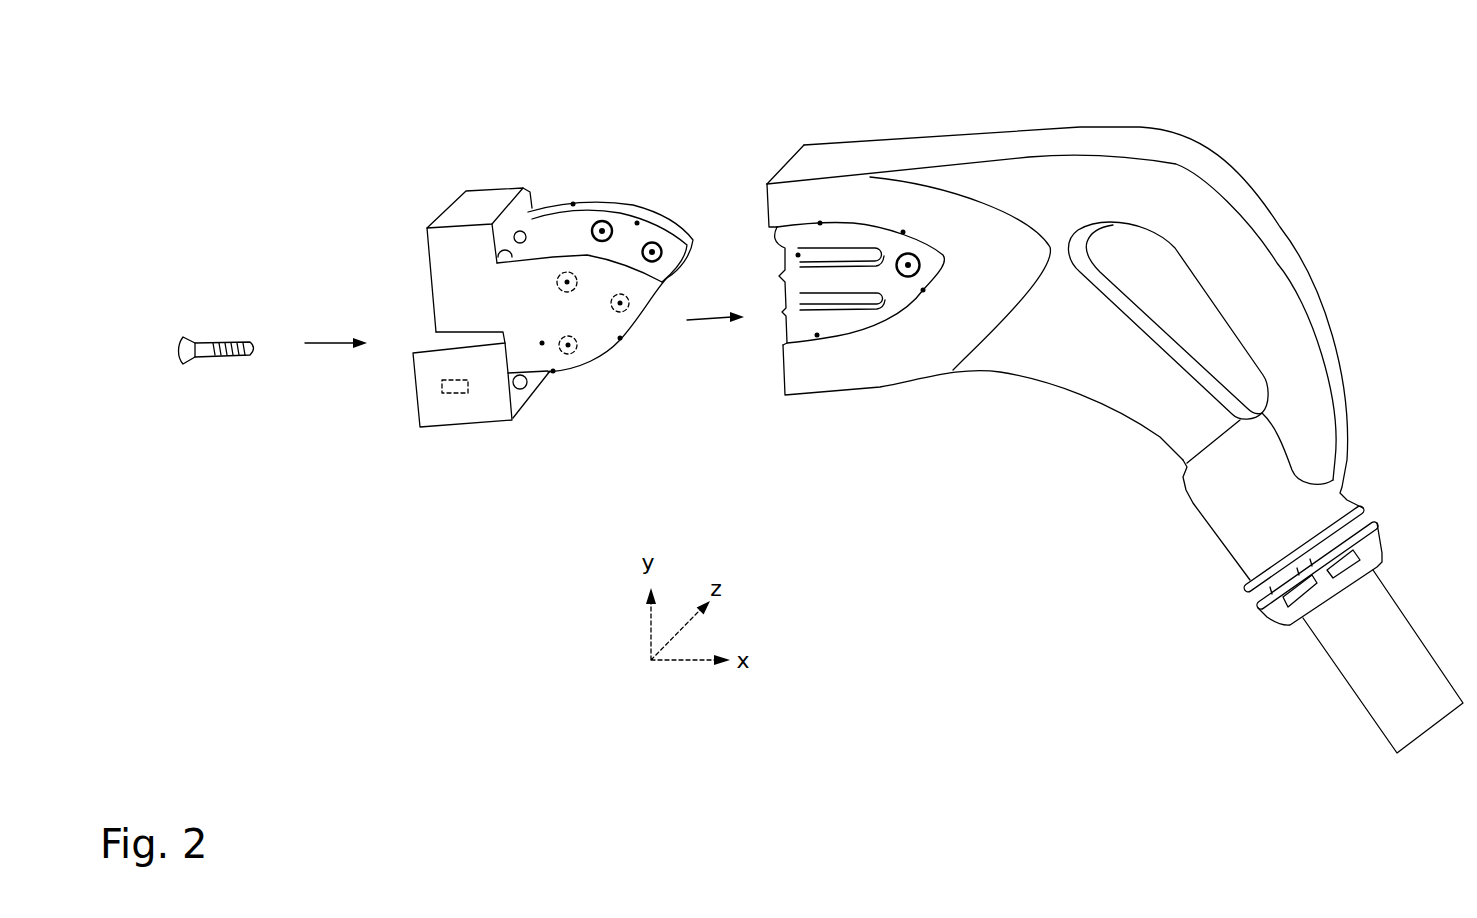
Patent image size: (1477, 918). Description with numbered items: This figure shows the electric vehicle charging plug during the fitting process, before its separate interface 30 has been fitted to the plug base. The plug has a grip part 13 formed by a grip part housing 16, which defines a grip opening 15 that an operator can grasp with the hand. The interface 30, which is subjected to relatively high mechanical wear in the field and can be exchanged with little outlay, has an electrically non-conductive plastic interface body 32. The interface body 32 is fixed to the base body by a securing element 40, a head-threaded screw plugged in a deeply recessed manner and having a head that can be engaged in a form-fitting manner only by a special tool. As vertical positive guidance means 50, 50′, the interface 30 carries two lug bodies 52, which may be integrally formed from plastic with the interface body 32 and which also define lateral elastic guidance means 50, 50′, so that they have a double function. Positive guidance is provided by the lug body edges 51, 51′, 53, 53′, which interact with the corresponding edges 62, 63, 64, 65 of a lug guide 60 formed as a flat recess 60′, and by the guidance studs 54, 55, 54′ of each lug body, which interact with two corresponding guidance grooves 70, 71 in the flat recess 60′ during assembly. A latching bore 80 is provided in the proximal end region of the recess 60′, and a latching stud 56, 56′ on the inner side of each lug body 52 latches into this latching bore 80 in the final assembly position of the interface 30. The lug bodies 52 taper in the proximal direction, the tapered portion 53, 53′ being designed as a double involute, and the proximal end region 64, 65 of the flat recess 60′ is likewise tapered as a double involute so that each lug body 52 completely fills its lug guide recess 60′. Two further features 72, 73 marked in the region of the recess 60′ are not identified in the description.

The grip part 13 is at (1080, 402).
The grip opening 15 is at (1147, 321).
The grip part housing 16 is at (998, 150).
The interface 30 is at (558, 282).
The interface body 32 is at (472, 217).
The securing element 40 is at (222, 315).
The vertical positive guidance means 50 is at (568, 392).
The vertical positive guidance means 50′ is at (595, 185).
The lug body edge 51 is at (553, 371).
The lug body edge 51′ is at (573, 204).
The lug body 52 is at (542, 343).
The tapered portion 53 is at (620, 338).
The tapered portion 53′ is at (667, 218).
The guidance stud 54 is at (566, 272).
The guidance stud 54′ is at (605, 221).
The guidance stud 55 is at (585, 374).
The latching stud 56 is at (627, 309).
The latching stud 56′ is at (661, 250).
The lug guide 60 is at (850, 269).
The flat recess 60′ is at (800, 281).
The edge of the lug guide 62 is at (820, 223).
The edge of the lug guide 63 is at (817, 335).
The proximal end region edge 64 is at (903, 232).
The proximal end region edge 65 is at (923, 290).
The guidance groove 70 is at (847, 257).
The guidance groove 71 is at (847, 302).
The slot end 72 is at (798, 255).
The bevel 73 is at (800, 312).
The latching bore 80 is at (908, 277).